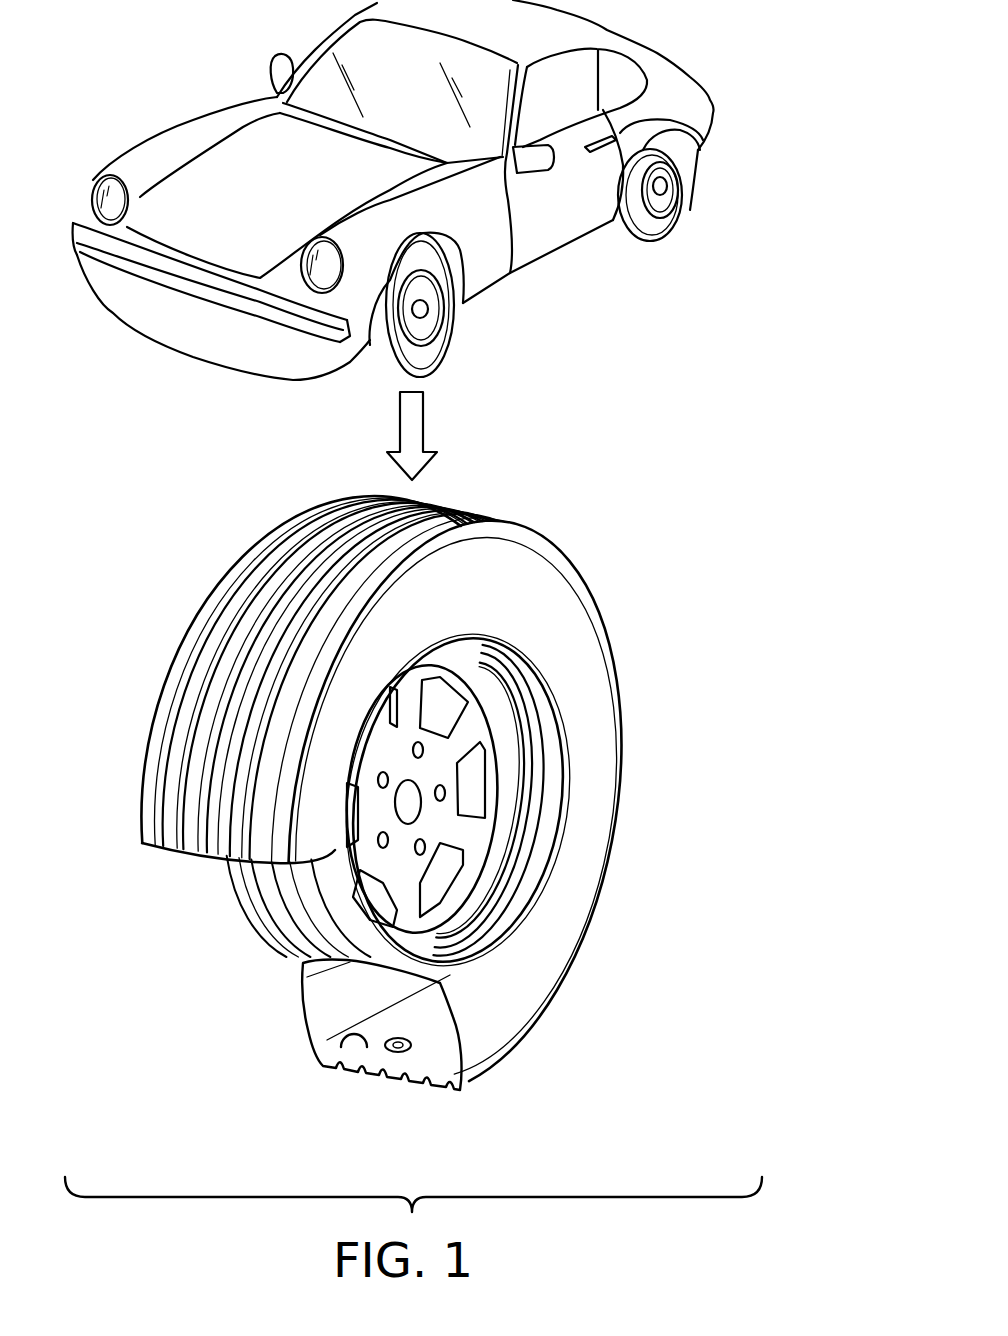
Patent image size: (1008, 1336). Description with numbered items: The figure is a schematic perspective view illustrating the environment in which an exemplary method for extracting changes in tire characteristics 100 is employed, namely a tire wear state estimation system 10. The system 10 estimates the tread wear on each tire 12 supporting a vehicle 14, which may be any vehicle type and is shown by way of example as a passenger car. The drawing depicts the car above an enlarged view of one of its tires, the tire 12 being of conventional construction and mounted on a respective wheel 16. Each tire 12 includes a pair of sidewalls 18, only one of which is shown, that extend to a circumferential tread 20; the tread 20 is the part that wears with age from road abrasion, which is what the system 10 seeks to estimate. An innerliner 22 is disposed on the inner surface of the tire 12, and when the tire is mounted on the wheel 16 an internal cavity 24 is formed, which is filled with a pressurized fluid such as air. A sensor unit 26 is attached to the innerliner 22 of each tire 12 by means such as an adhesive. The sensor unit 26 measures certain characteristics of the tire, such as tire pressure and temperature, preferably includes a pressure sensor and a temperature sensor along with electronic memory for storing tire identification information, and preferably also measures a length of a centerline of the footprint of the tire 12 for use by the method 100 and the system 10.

The method for extracting changes in tire characteristics 100 is at (727, 420).
The tire wear state estimation system 10 is at (705, 530).
The tire 12 is at (448, 355).
The vehicle 14 is at (188, 123).
The wheel 16 is at (463, 838).
The sidewall 18 is at (598, 730).
The circumferential tread 20 is at (207, 663).
The innerliner 22 is at (340, 1044).
The internal cavity 24 is at (350, 995).
The sensor unit 26 is at (412, 1052).